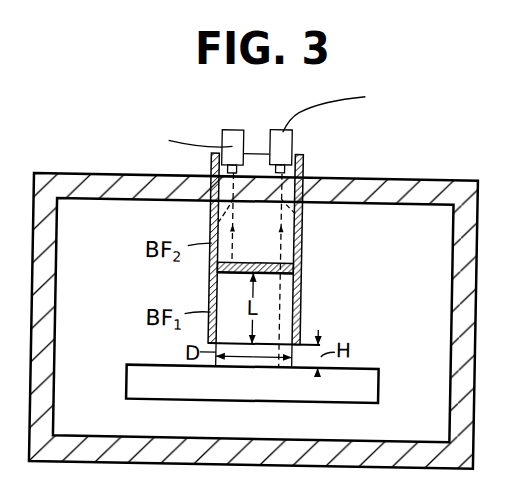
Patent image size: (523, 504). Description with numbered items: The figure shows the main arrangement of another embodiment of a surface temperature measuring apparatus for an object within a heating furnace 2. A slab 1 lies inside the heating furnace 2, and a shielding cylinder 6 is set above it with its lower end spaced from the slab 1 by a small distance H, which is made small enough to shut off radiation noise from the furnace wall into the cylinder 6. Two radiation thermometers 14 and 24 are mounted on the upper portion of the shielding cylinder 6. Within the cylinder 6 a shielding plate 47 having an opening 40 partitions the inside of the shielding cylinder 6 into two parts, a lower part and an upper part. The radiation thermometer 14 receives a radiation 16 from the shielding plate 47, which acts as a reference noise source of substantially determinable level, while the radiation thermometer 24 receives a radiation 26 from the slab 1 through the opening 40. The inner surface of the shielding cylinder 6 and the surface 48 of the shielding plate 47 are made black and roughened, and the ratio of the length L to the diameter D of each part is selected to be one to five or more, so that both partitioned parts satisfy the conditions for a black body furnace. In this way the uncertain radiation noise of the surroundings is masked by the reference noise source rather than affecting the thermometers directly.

The slab 1 is at (377, 362).
The heating furnace 2 is at (436, 173).
The shielding cylinder 6 is at (303, 246).
The radiation thermometer 14 is at (234, 141).
The radiation 16 is at (212, 216).
The radiation thermometer 24 is at (291, 150).
The radiation 26 is at (304, 216).
The opening 40 is at (303, 284).
The shielding plate 47 is at (238, 258).
The surface of the shielding plate 48 is at (213, 265).